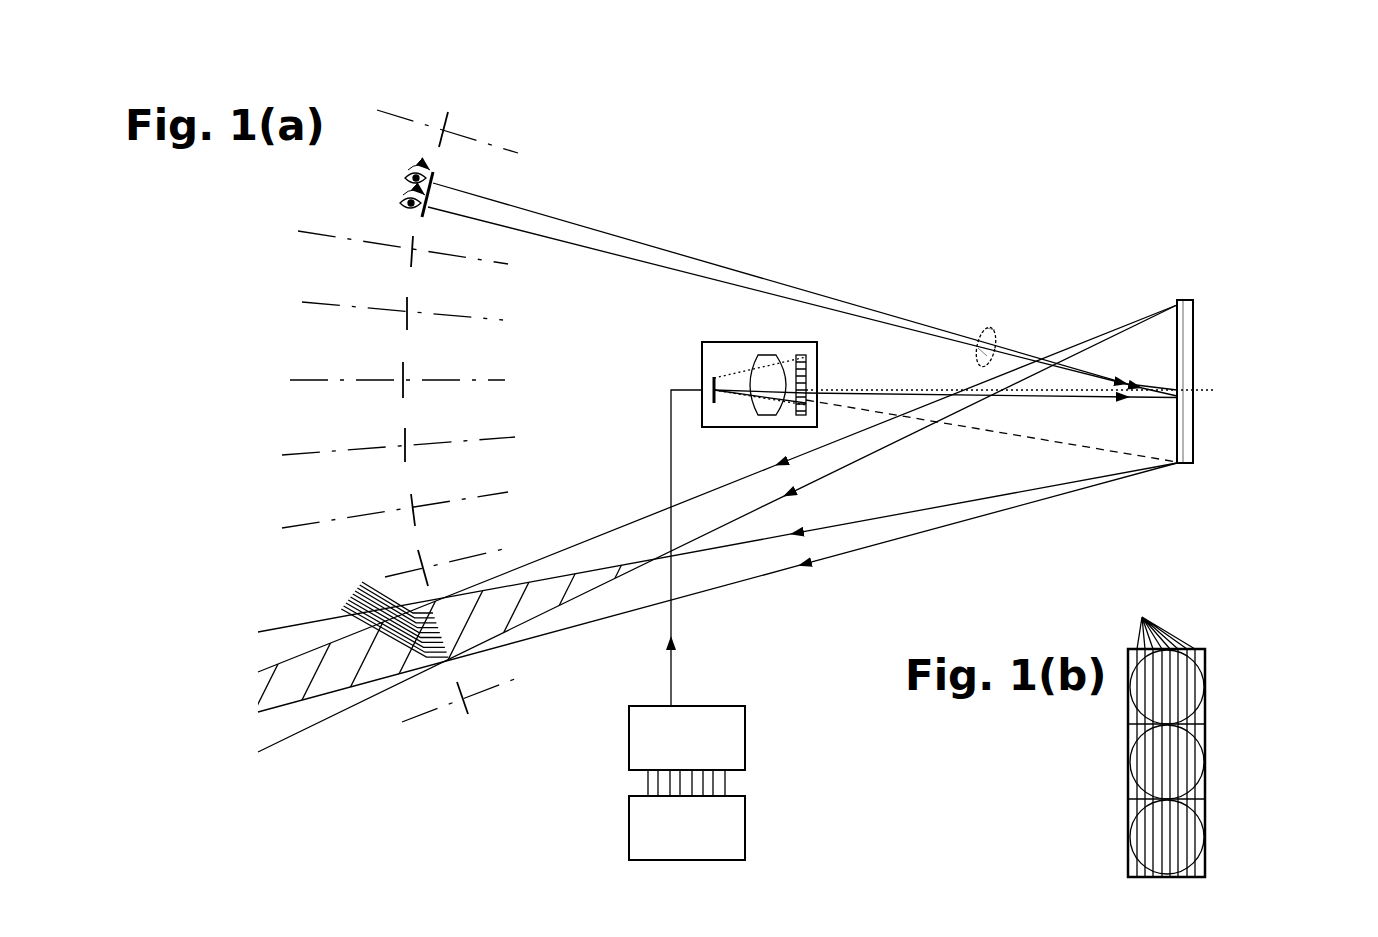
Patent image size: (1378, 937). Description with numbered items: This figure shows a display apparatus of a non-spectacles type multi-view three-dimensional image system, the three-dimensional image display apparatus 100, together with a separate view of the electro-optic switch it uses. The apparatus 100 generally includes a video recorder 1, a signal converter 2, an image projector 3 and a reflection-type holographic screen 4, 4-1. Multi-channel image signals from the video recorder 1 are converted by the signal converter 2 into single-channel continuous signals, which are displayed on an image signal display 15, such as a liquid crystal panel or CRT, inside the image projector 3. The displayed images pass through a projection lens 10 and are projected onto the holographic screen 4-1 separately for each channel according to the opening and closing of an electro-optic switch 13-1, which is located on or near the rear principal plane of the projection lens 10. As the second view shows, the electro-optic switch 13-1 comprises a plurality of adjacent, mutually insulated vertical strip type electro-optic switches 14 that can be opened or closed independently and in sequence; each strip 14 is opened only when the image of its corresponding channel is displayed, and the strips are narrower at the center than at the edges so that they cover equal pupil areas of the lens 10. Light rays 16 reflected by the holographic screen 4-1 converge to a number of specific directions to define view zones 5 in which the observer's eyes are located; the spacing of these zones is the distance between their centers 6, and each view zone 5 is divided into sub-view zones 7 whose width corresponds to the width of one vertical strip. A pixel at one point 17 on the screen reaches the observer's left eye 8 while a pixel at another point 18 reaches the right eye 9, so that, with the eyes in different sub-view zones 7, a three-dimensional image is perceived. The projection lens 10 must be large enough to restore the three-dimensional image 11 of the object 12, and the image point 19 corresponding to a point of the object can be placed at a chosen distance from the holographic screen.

In FIG. 1A, the video recorder 1 is at (629, 823).
In FIG. 1A, the signal converter 2 is at (629, 732).
In FIG. 1A, the image projector 3 is at (723, 345).
In FIG. 1A, the holographic screen 4 is at (1247, 416).
In FIG. 1A, the holographic screen 4-1 is at (1185, 450).
In FIG. 1A, the view zone 5 is at (538, 636).
In FIG. 1A, the center of view zone 6 is at (413, 247).
In FIG. 1A, the sub-view zone 7 is at (389, 617).
In FIG. 1A, the left eye 8 is at (445, 176).
In FIG. 1A, the right eye 9 is at (430, 218).
In FIG. 1A, the projection lens 10 is at (770, 355).
In FIG. 1B, the projection lens 10 is at (1210, 813).
In FIG. 1A, the three-dimensional image 11 is at (997, 331).
In FIG. 1A, the object 12 is at (990, 328).
In FIG. 1A, the electro-optic switch 13-1 is at (812, 352).
In FIG. 1B, the electro-optic switch 13-1 is at (1125, 790).
In FIG. 1B, the vertical strip type electro-optic switch 14 is at (1154, 620).
In FIG. 1A, the image signal display 15 is at (714, 375).
In FIG. 1A, the light rays 16 is at (895, 515).
In FIG. 1A, the point on the holographic screen 17 is at (1185, 402).
In FIG. 1A, the point on the holographic screen 18 is at (1195, 393).
In FIG. 1A, the image point 19 is at (978, 348).
In FIG. 1A, the three-dimensional image display apparatus 100 is at (868, 208).